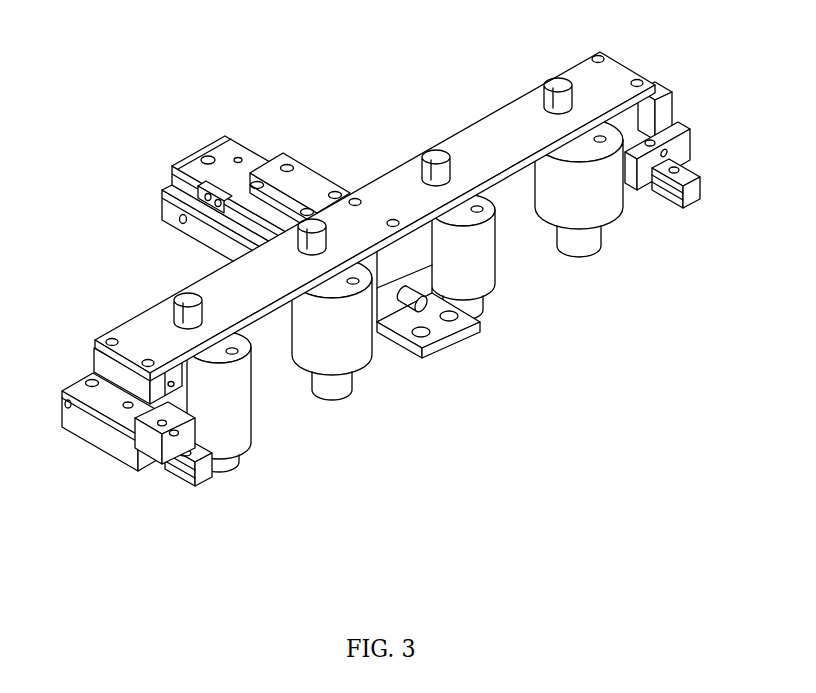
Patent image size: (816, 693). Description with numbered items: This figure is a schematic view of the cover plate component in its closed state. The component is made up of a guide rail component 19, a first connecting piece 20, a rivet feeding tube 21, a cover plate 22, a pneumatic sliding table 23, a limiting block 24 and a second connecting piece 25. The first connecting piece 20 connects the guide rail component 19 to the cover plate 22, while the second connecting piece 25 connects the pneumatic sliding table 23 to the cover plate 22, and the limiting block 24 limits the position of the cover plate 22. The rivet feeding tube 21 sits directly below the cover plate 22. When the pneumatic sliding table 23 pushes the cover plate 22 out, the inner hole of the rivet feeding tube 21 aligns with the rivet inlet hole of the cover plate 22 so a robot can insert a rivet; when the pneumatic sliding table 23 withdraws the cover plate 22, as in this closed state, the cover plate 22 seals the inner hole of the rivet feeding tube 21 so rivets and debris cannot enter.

The guide rail component 19 is at (88, 423).
The first connecting piece 20 is at (130, 382).
The rivet feeding tube 21 is at (215, 385).
The cover plate 22 is at (255, 288).
The pneumatic sliding table 23 is at (288, 195).
The limiting block 24 is at (408, 318).
The second connecting piece 25 is at (403, 248).